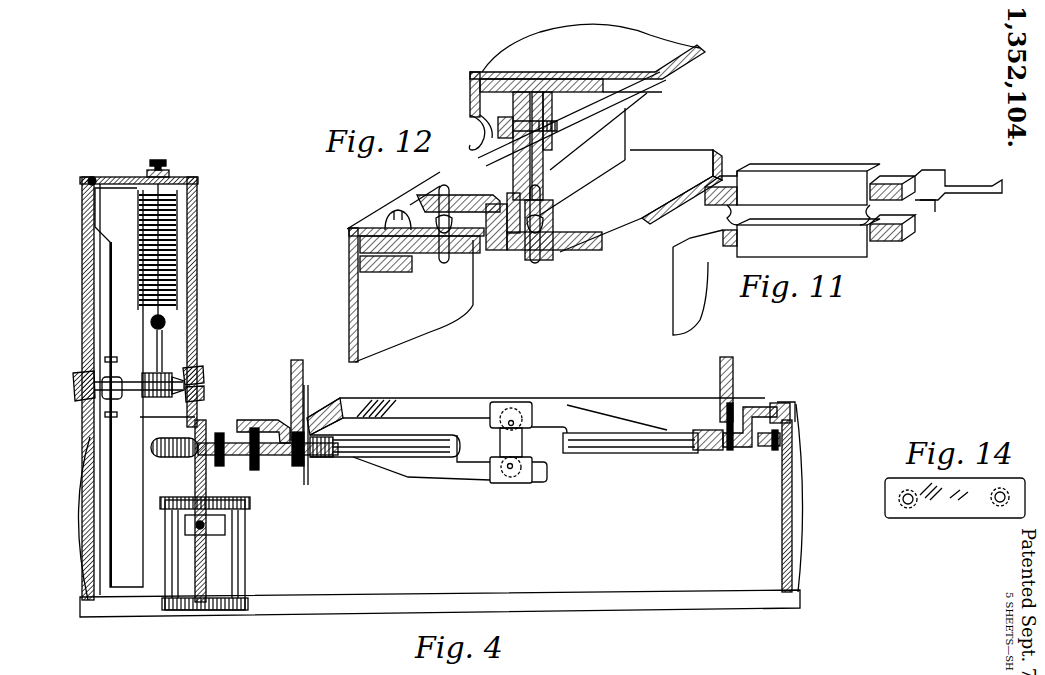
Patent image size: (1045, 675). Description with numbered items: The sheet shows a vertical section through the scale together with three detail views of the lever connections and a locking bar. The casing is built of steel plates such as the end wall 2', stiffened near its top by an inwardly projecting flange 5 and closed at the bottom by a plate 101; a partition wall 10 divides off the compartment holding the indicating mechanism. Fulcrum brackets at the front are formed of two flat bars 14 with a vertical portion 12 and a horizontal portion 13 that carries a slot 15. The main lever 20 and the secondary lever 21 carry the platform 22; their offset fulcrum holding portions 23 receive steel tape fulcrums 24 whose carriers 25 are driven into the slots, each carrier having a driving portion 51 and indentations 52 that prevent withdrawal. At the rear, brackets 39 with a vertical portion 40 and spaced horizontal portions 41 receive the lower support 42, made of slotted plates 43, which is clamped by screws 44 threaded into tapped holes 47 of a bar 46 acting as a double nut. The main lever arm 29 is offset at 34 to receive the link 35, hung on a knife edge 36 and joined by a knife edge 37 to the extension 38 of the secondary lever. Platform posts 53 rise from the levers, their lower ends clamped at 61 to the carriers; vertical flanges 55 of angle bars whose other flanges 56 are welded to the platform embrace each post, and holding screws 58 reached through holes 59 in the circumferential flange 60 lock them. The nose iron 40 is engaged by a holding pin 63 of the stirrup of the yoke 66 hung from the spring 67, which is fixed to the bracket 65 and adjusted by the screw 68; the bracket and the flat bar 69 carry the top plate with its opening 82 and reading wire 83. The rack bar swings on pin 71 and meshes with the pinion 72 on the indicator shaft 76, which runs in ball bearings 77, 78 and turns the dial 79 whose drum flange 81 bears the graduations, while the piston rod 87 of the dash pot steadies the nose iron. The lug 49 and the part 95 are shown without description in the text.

In FIG. 4, the end wall plate 2' is at (433, 502).
In FIG. 4, the inwardly projecting flange 5 is at (792, 408).
In FIG. 4, the partition wall 10 is at (199, 365).
In FIG. 12, the partition wall 10 is at (349, 322).
In FIG. 4, the vertical portion of bracket 12 is at (782, 508).
In FIG. 11, the vertical portion of bracket 12 is at (676, 294).
In FIG. 4, the horizontal portion of bracket 13 is at (760, 447).
In FIG. 11, the horizontal portion of bracket 13 is at (700, 237).
In FIG. 4, the flat bars 14 is at (782, 537).
In FIG. 4, the slot 15 is at (772, 447).
In FIG. 12, the slot 15 is at (566, 256).
In FIG. 4, the main lever 20 is at (650, 455).
In FIG. 4, the secondary lever 21 is at (372, 458).
In FIG. 12, the platform 22 is at (520, 50).
In FIG. 4, the fulcrum holding portion 23 is at (242, 422).
In FIG. 12, the fulcrum holding portion 23 is at (425, 196).
In FIG. 11, the fulcrum holding portion 23 is at (922, 176).
In FIG. 4, the steel tape fulcrum 24 is at (218, 462).
In FIG. 12, the steel tape fulcrum 24 is at (632, 174).
In FIG. 11, the steel tape fulcrum 24 is at (840, 216).
In FIG. 12, the fulcrum carrier 25 is at (540, 262).
In FIG. 11, the fulcrum carrier 25 is at (770, 180).
In FIG. 4, the main lever arm 29 is at (555, 406).
In FIG. 4, the offset 34 is at (505, 406).
In FIG. 4, the link 35 is at (518, 445).
In FIG. 4, the knife edge fulcrum 36 is at (509, 422).
In FIG. 4, the knife edge fulcrum 37 is at (510, 468).
In FIG. 4, the extension 38 is at (438, 472).
In FIG. 4, the bracket 39 is at (205, 536).
In FIG. 12, the bracket 39 is at (430, 328).
In FIG. 4, the nose iron 40 is at (174, 456).
In FIG. 12, the nose iron 40 is at (328, 339).
In FIG. 12, the horizontal portion of bracket 41 is at (372, 232).
In FIG. 12, the lower support 42 is at (484, 246).
In FIG. 12, the plates 43 is at (436, 263).
In FIG. 12, the fastening screws 44 is at (396, 208).
In FIG. 12, the bar 46 is at (375, 273).
In FIG. 14, the bar 46 is at (953, 502).
In FIG. 14, the tapped holes 47 is at (1002, 494).
In FIG. 11, the lug 49 is at (928, 215).
In FIG. 11, the driving portion 51 is at (896, 182).
In FIG. 11, the indentation 52 is at (870, 178).
In FIG. 4, the platform post 53 is at (303, 390).
In FIG. 12, the platform post 53 is at (626, 115).
In FIG. 12, the vertical flange 55 is at (640, 88).
In FIG. 12, the flange 56 is at (535, 72).
In FIG. 12, the holding screw 58 is at (557, 126).
In FIG. 12, the hole 59 is at (478, 130).
In FIG. 12, the circumferential flange 60 is at (470, 100).
In FIG. 12, the offset clamped portion 61 is at (626, 125).
In FIG. 4, the holding pin 63 is at (166, 452).
In FIG. 4, the bracket 65 is at (197, 295).
In FIG. 4, the yoke 66 is at (163, 350).
In FIG. 4, the spring 67 is at (180, 240).
In FIG. 4, the adjusting screw 68 is at (166, 164).
In FIG. 4, the flat bar 69 is at (86, 298).
In FIG. 4, the pin 71 is at (165, 322).
In FIG. 4, the indicator pinion 72 is at (190, 404).
In FIG. 4, the indicator shaft 76 is at (132, 400).
In FIG. 4, the ball bearing 77 is at (206, 382).
In FIG. 4, the ball bearing 78 is at (76, 396).
In FIG. 4, the indicator dial 79 is at (130, 540).
In FIG. 4, the flange 81 is at (116, 630).
In FIG. 4, the opening 82 is at (86, 178).
In FIG. 4, the thread or wire 83 is at (112, 178).
In FIG. 4, the piston rod 87 is at (196, 480).
In FIG. 4, the cylinder 95 is at (246, 550).
In FIG. 4, the bottom plate 101 is at (597, 597).